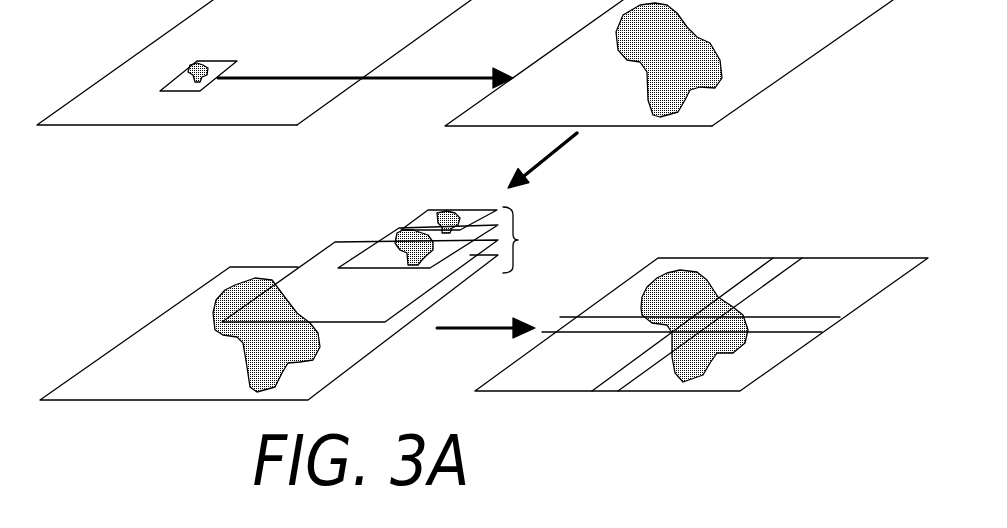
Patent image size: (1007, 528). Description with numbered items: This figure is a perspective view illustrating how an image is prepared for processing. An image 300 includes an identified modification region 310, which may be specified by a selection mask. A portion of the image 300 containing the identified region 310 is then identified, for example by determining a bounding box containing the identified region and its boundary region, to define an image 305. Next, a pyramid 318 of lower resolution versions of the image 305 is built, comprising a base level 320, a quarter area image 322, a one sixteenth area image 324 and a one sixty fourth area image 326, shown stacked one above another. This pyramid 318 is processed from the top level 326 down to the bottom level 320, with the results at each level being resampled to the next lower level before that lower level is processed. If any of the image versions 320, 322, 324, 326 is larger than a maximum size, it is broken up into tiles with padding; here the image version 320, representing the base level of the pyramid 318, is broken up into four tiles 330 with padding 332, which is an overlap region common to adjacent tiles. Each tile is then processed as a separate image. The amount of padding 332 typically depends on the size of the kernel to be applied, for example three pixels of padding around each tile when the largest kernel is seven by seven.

The image 300 is at (173, 125).
The image 305 is at (163, 90).
The identified modification region 310 is at (203, 62).
The pyramid 318 is at (518, 240).
The base level 320 is at (230, 267).
The quarter area image 322 is at (335, 242).
The one sixteenth area image 324 is at (399, 227).
The one sixty fourth area image 326 is at (439, 210).
The tiles 330 is at (690, 258).
The padding 332 is at (830, 328).